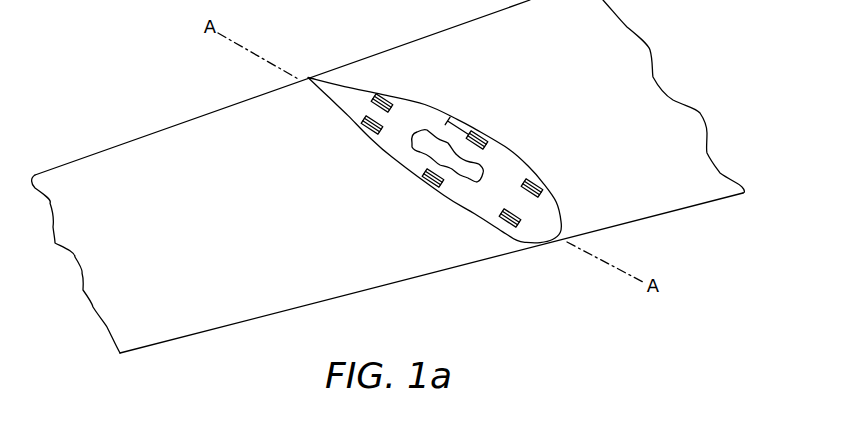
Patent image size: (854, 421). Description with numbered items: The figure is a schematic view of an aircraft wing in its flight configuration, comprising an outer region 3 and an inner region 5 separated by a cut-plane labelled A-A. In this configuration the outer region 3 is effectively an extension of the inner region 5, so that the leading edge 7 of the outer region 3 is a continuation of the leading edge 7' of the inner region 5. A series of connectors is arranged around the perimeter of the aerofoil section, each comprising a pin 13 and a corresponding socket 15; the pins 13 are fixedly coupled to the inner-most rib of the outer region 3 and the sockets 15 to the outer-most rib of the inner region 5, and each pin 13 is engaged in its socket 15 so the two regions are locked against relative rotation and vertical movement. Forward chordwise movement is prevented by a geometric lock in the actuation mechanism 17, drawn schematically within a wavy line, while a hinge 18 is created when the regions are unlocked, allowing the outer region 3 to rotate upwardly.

The outer region 3 is at (208, 241).
The inner region 5 is at (611, 99).
The leading edge 7 is at (431, 273).
The leading edge 7' is at (692, 226).
The pin 13 is at (398, 101).
The socket 15 is at (378, 95).
The actuation mechanism 17 is at (478, 165).
The hinge 18 is at (463, 126).